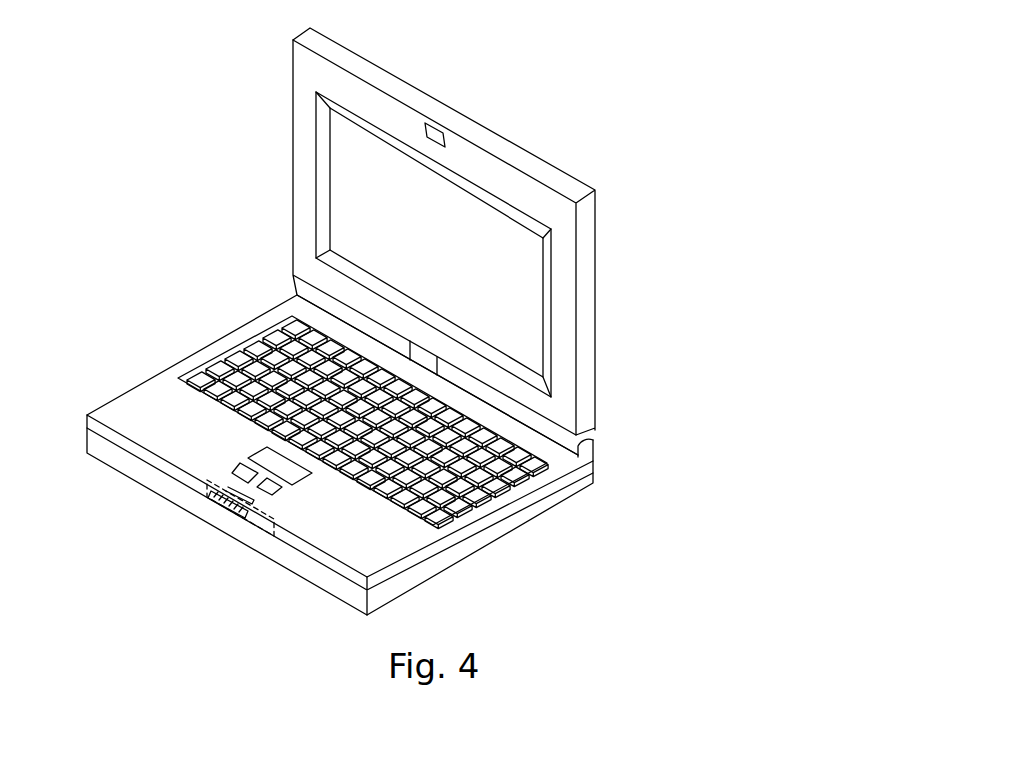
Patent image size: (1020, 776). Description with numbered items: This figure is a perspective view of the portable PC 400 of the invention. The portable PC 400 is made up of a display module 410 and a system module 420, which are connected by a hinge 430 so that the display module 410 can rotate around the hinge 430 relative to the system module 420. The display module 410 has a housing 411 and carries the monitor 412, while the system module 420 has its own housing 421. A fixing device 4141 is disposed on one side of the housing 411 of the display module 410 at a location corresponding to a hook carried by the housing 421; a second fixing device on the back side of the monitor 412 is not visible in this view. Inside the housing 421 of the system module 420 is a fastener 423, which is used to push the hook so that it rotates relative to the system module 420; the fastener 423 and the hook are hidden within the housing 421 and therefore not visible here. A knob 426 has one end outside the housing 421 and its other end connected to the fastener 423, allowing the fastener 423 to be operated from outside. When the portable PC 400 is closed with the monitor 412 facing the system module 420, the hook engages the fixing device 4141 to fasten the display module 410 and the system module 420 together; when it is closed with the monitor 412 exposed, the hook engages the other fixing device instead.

The portable PC 400 is at (798, 187).
The display module 410 is at (572, 158).
The housing of the display module 411 is at (510, 138).
The monitor 412 is at (347, 193).
The fixing device 4141 is at (443, 132).
The system module 420 is at (123, 357).
The housing of the system module 421 is at (440, 540).
The fastener 423 is at (270, 523).
The knob 426 is at (207, 498).
The hinge 430 is at (412, 355).